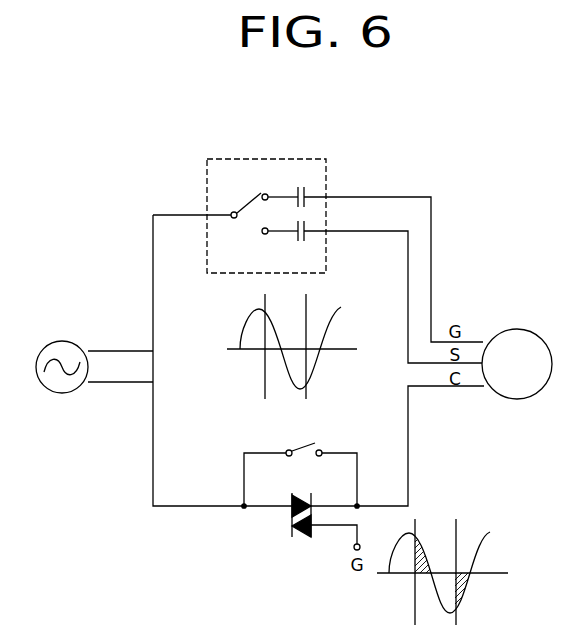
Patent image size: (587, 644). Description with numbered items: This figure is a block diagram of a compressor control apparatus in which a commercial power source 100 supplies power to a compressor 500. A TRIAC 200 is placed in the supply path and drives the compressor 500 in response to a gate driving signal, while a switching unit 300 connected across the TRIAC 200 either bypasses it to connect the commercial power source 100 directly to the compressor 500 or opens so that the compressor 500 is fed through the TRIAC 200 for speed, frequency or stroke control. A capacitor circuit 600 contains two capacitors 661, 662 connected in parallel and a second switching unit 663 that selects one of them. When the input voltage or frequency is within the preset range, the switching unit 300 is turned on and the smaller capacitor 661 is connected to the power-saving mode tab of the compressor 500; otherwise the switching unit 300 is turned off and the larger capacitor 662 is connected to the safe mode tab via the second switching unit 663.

The commercial power source 100 is at (60, 341).
The TRIAC 200 is at (293, 525).
The switching unit 300 is at (297, 447).
The compressor 500 is at (517, 329).
The capacitor circuit 600 is at (265, 159).
The capacitor 661 is at (300, 185).
The capacitor 662 is at (288, 243).
The second switching unit 663 is at (240, 198).